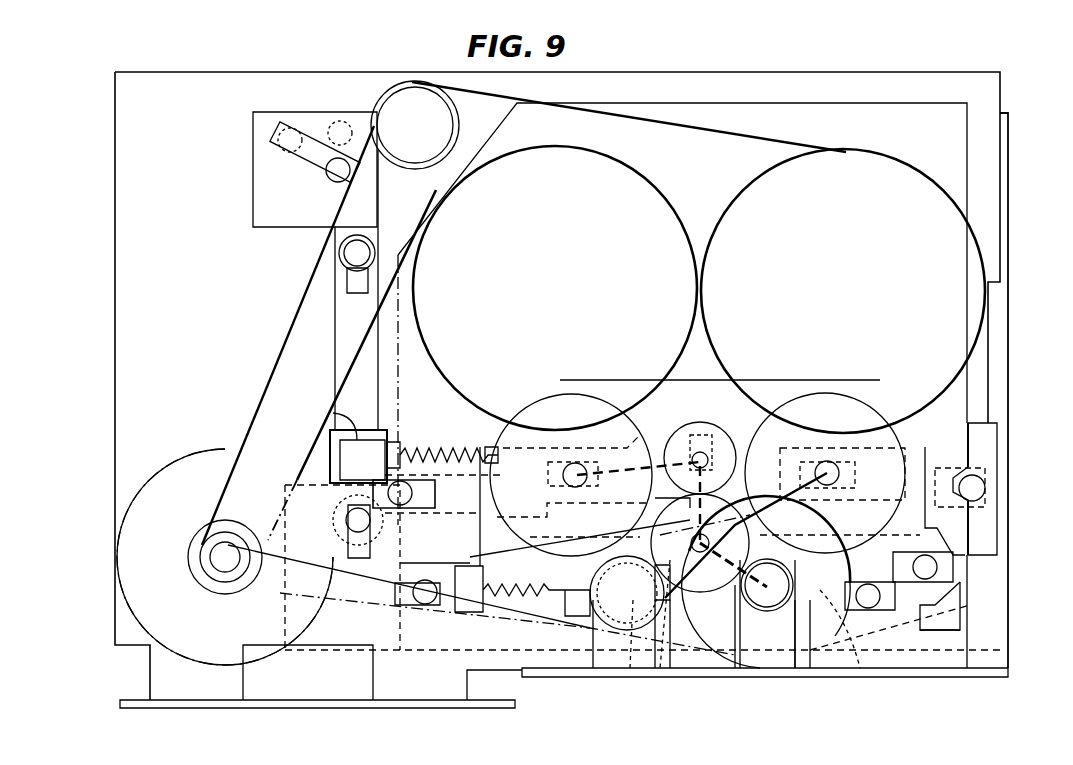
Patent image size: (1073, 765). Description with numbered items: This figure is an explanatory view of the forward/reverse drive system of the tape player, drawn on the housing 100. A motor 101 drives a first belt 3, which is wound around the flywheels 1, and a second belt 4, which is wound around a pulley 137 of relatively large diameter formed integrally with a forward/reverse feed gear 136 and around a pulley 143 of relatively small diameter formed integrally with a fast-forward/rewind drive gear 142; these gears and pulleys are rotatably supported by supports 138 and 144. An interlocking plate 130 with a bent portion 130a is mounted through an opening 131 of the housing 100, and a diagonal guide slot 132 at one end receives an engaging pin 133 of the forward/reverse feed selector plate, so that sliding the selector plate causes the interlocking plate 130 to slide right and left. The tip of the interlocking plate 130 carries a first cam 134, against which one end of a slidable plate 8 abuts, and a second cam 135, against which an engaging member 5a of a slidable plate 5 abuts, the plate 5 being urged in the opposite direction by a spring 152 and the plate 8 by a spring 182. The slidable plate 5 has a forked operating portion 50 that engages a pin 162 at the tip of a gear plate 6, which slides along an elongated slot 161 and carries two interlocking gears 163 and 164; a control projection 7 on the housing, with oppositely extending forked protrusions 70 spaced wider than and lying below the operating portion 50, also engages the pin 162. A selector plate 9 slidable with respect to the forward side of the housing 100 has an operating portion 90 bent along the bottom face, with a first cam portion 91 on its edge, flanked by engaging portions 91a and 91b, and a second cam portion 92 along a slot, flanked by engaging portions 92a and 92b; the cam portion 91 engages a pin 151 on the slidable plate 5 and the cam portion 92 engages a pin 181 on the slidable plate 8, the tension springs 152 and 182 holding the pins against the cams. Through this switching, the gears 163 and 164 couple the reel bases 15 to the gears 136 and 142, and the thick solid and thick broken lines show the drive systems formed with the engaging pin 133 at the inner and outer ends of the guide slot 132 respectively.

The flywheel 1 is at (521, 149).
The first belt 3 is at (268, 378).
The second belt 4 is at (392, 600).
The slidable plate 5 is at (553, 672).
The engaging member 5a is at (290, 600).
The gear plate 6 is at (650, 498).
The control projection 7 is at (682, 580).
The slidable plate 8 is at (545, 420).
The selector plate 9 is at (1008, 252).
The reel base 15 is at (600, 395).
The forked operating portion 50 is at (742, 508).
The forked protrusion 70 is at (660, 550).
The operating portion 90 is at (968, 423).
The first cam portion 91 is at (945, 595).
The engaging portion 91a is at (980, 545).
The engaging portion 91b is at (935, 615).
The second cam portion 92 is at (985, 475).
The engaging portion 92a is at (985, 450).
The engaging portion 92b is at (985, 520).
The housing 100 is at (115, 392).
The motor 101 is at (198, 664).
The interlocking plate 130 is at (335, 325).
The bent portion 130a is at (340, 418).
The opening 131 is at (330, 456).
The diagonal guide slot 132 is at (330, 142).
The engaging pin 133 is at (332, 175).
The first cam 134 is at (390, 515).
The second cam 135 is at (395, 596).
The forward/reverse feed gear 136 is at (772, 612).
The pulley 137 is at (862, 672).
The support 138 is at (818, 672).
The fast-forward/rewind drive gear 142 is at (633, 672).
The pulley 143 is at (612, 575).
The support 144 is at (662, 612).
The pin 151 is at (940, 568).
The tension spring 152 is at (515, 603).
The elongated slot 161 is at (682, 445).
The pin 162 is at (720, 585).
The interlocking gear 163 is at (702, 430).
The interlocking gear 164 is at (660, 520).
The pin 181 is at (985, 490).
The tension spring 182 is at (448, 452).